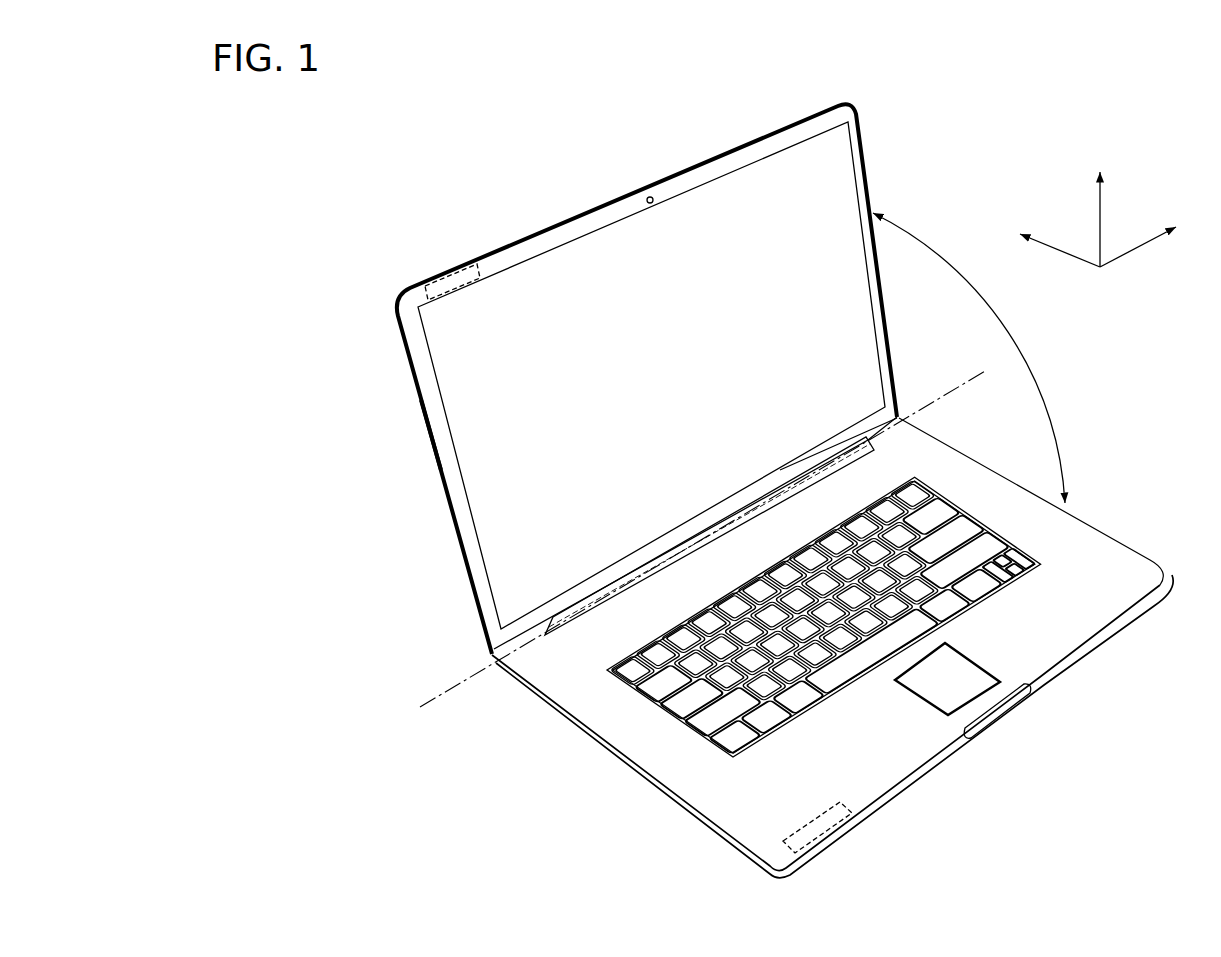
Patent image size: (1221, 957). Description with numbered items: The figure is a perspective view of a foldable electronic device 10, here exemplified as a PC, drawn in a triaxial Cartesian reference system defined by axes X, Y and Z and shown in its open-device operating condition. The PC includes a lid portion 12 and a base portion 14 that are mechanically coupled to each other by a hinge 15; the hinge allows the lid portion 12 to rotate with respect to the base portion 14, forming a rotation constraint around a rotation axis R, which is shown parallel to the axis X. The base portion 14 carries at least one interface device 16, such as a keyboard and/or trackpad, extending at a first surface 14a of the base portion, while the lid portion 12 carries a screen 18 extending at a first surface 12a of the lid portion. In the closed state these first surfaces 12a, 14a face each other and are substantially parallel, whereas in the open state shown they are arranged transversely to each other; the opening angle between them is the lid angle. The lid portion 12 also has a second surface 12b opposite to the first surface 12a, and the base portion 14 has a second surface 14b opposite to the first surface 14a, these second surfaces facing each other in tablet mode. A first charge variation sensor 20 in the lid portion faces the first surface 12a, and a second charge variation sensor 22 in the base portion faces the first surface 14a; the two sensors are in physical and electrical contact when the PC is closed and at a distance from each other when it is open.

The foldable electronic device 10 is at (336, 221).
The lid portion 12 is at (436, 444).
The first surface of the lid portion 12a is at (531, 435).
The second surface of the lid portion 12b is at (414, 383).
The base portion 14 is at (680, 795).
The first surface of the base portion 14a is at (619, 731).
The second surface of the base portion 14b is at (965, 760).
The hinge 15 is at (586, 628).
The interface device 16 is at (961, 648).
The screen 18 is at (683, 416).
The first charge variation sensor 20 is at (424, 281).
The second charge variation sensor 22 is at (812, 810).
The rotation axis R is at (437, 692).